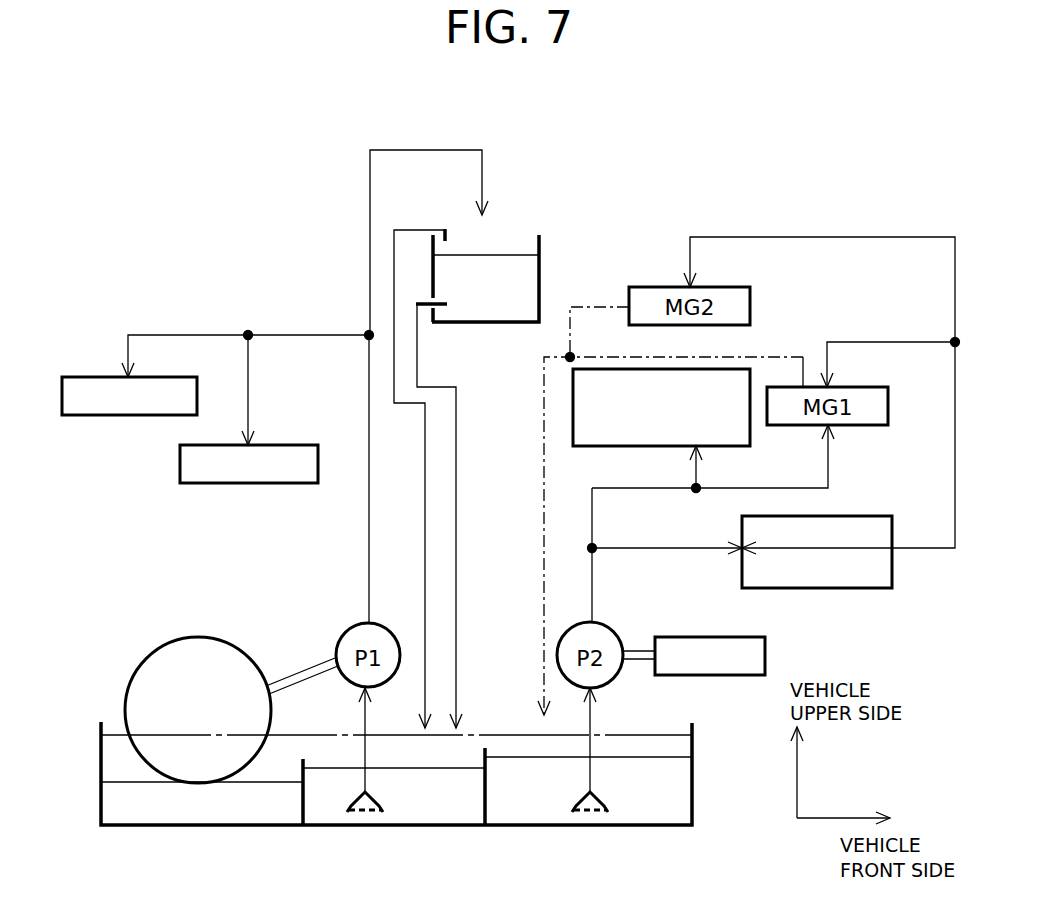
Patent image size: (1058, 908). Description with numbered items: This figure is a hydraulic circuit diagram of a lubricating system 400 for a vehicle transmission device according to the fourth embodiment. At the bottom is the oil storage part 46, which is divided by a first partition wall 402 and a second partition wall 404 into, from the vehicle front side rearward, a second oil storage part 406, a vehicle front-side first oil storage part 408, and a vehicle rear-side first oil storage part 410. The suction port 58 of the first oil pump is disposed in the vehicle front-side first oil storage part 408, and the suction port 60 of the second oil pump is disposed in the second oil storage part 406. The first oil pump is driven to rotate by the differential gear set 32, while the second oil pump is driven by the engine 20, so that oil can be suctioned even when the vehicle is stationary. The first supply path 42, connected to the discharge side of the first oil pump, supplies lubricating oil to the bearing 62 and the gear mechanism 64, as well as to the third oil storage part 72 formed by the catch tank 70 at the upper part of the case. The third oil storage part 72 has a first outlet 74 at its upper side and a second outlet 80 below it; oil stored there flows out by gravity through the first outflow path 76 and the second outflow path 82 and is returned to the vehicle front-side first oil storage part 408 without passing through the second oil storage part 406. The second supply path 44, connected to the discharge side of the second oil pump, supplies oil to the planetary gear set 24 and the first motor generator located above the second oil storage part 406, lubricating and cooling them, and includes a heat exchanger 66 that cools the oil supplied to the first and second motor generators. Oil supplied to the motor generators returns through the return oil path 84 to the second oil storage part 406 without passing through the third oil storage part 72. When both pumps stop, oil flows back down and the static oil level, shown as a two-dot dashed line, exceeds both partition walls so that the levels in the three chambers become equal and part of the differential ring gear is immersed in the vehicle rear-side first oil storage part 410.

The engine 20 is at (700, 640).
The planetary gear set 24 is at (645, 441).
The differential gear set 32 is at (178, 650).
The first supply path 42 is at (350, 552).
The second supply path 44 is at (738, 222).
The oil storage part 46 is at (688, 833).
The suction port 58 is at (365, 815).
The suction port 60 is at (592, 815).
The bearing 62 is at (215, 481).
The gear mechanism 64 is at (99, 411).
The heat exchanger 66 is at (835, 520).
The catch tank 70 is at (563, 285).
The third oil storage part 72 is at (512, 263).
The first outlet 74 is at (448, 222).
The first outflow path 76 is at (391, 320).
The second outlet 80 is at (422, 298).
The second outflow path 82 is at (467, 403).
The return oil path 84 is at (777, 344).
The lubricating system 400 is at (793, 188).
The first partition wall 402 is at (483, 823).
The second partition wall 404 is at (302, 808).
The second oil storage part 406 is at (648, 805).
The vehicle front-side first oil storage part 408 is at (417, 813).
The vehicle rear-side first oil storage part 410 is at (180, 810).